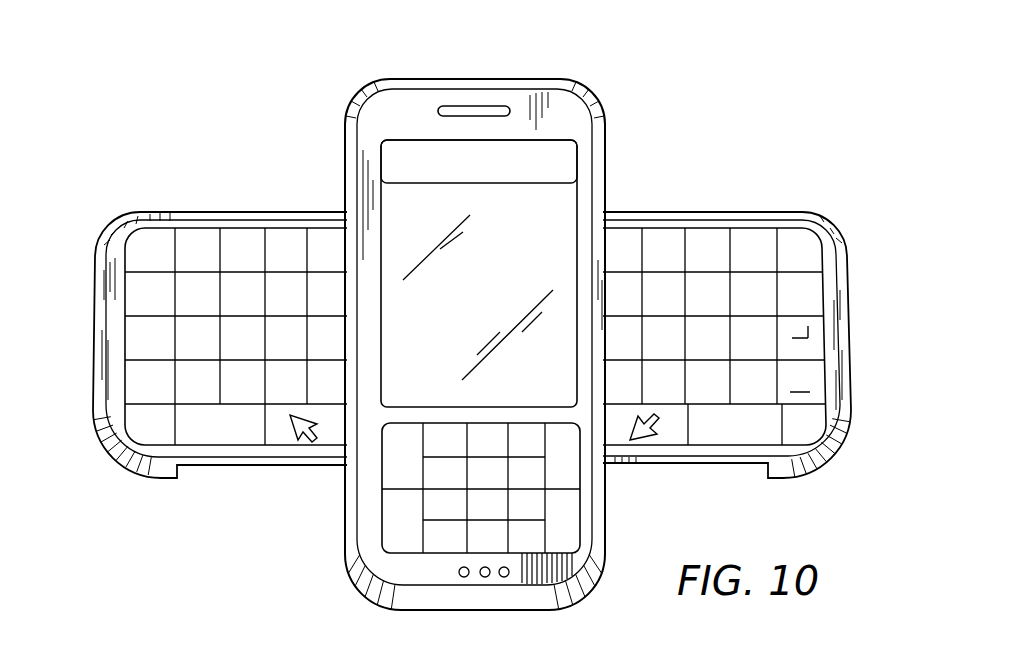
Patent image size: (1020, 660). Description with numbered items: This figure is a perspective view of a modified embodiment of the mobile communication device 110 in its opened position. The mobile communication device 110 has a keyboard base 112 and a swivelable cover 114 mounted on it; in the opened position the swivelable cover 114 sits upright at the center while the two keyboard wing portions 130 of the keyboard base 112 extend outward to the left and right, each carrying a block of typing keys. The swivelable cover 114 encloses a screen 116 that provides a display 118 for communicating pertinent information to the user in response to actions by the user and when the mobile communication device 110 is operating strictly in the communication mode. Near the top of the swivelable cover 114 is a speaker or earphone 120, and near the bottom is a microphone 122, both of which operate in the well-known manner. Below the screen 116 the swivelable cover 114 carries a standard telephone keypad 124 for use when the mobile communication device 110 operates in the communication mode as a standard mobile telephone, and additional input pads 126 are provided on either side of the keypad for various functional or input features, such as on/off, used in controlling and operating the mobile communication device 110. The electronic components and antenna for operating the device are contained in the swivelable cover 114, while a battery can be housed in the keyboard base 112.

The mobile communication device 110 is at (639, 183).
The keyboard base 112 is at (745, 213).
The swivelable cover 114 is at (342, 552).
The screen 116 is at (381, 168).
The display 118 is at (496, 292).
The speaker or earphone 120 is at (475, 108).
The microphone 122 is at (487, 579).
The standard telephone keypad 124 is at (524, 557).
The additional input pads 126 is at (393, 515).
The keyboard wing portions 130 is at (97, 292).